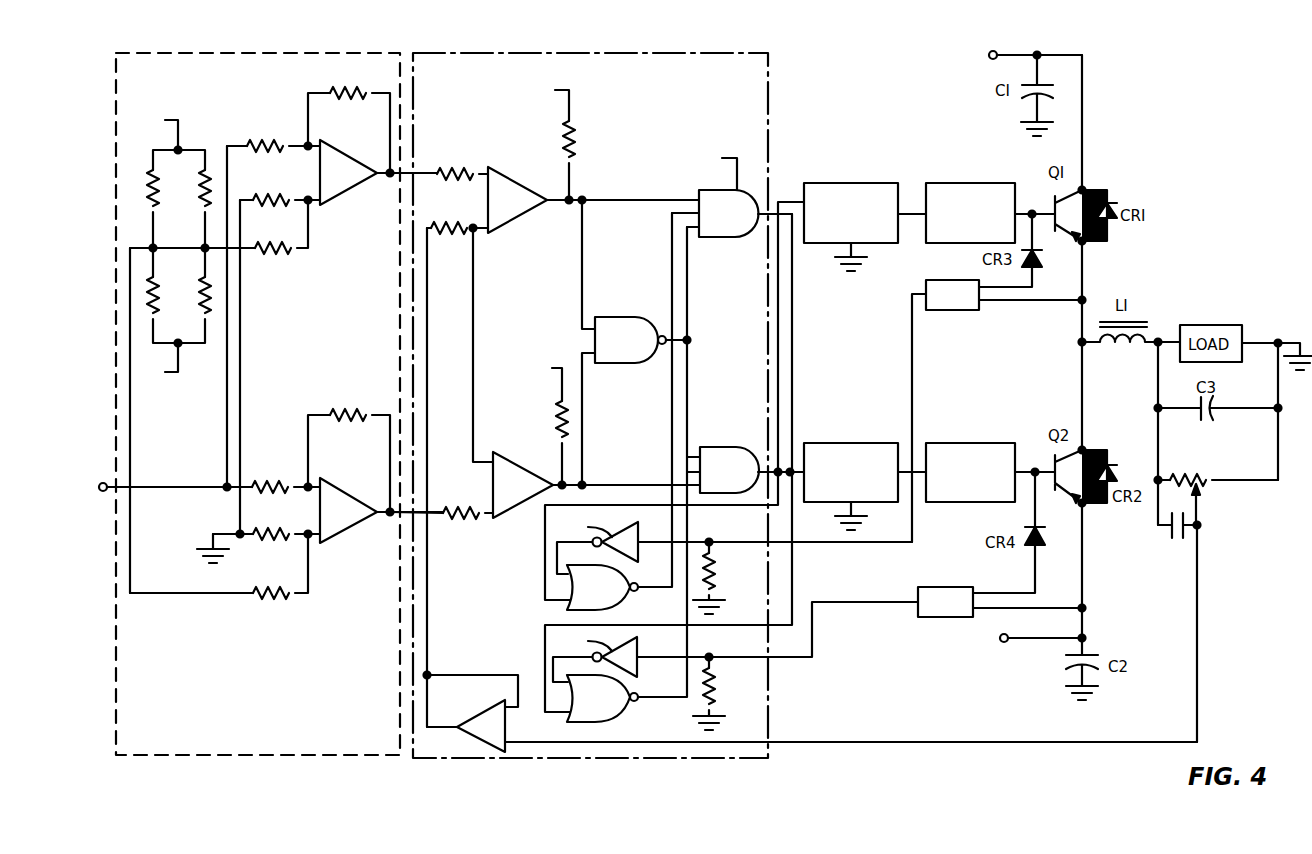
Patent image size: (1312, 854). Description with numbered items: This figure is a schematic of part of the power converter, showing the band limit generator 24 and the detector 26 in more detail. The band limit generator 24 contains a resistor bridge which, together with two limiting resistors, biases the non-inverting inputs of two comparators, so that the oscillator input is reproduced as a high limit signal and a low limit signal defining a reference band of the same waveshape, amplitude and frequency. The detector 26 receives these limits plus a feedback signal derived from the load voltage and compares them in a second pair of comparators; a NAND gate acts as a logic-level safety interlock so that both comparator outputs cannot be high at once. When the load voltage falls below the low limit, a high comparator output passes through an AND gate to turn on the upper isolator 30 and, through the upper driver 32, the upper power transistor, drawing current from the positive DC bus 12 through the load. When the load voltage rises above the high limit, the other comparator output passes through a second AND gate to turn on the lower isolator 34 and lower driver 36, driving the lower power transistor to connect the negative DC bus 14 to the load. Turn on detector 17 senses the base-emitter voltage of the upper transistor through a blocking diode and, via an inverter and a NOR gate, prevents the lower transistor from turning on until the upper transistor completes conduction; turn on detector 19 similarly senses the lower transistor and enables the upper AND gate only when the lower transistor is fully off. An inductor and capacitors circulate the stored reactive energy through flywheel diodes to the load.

The band limit generator 24 is at (268, 53).
The detector 26 is at (575, 53).
The positive DC bus 12 is at (1010, 55).
The negative DC bus 14 is at (1028, 640).
The turn on detector 17 is at (958, 310).
The turn on detector 19 is at (940, 587).
The upper isolator 30 is at (840, 183).
The upper driver 32 is at (960, 183).
The lower isolator 34 is at (848, 443).
The lower driver 36 is at (966, 443).